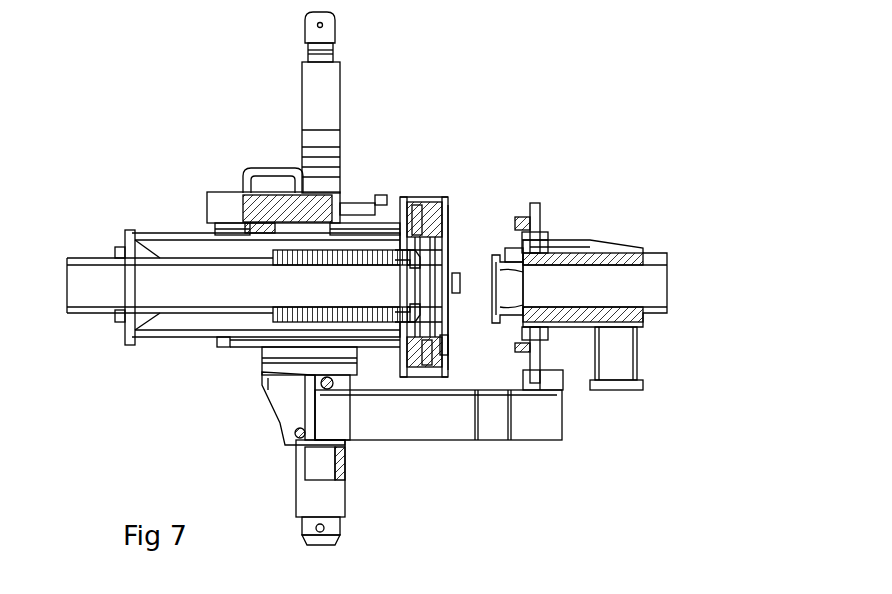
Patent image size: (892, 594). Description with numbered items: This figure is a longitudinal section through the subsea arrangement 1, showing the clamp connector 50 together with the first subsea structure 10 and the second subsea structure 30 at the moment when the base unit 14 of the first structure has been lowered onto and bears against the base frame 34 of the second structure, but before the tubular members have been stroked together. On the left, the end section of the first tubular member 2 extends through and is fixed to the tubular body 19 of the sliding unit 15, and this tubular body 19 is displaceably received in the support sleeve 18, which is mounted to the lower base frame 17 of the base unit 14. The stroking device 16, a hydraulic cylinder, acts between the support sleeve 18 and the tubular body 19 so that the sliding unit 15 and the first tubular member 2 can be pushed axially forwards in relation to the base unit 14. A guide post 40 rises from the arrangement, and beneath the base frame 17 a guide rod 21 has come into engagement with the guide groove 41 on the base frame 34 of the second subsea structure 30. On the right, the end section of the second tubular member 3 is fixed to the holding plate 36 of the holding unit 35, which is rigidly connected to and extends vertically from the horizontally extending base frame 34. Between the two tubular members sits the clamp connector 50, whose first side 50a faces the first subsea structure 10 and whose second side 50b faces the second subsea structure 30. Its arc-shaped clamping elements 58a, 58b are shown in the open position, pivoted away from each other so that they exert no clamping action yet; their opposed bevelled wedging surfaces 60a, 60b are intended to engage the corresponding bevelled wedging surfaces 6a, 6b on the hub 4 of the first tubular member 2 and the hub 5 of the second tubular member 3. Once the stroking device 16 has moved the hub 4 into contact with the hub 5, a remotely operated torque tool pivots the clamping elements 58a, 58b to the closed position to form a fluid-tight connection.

The subsea arrangement 1 is at (445, 70).
The first tubular member 2 is at (90, 258).
The second tubular member 3 is at (665, 253).
The hub 4 is at (447, 303).
The hub 5 is at (493, 258).
The bevelled wedging surface 6a is at (418, 258).
The bevelled wedging surface 6b is at (510, 250).
The first subsea structure 10 is at (180, 172).
The base unit 14 is at (248, 373).
The sliding unit 15 is at (132, 205).
The stroking device 16 is at (354, 196).
The lower base frame 17 is at (290, 425).
The support sleeve 18 is at (227, 348).
The tubular body 19 is at (180, 232).
The guide rod 21 is at (320, 386).
The second subsea structure 30 is at (626, 210).
The base frame 34 is at (533, 432).
The holding unit 35 is at (551, 214).
The holding plate 36 is at (536, 203).
The guide post 40 is at (312, 87).
The guide groove 41 is at (331, 388).
The clamp connector 50 is at (438, 195).
The first side 50a is at (401, 200).
The second side 50b is at (456, 212).
The clamping element 58a is at (414, 208).
The clamping element 58b is at (432, 388).
The bevelled wedging surface 60a is at (423, 390).
The bevelled wedging surface 60b is at (448, 340).